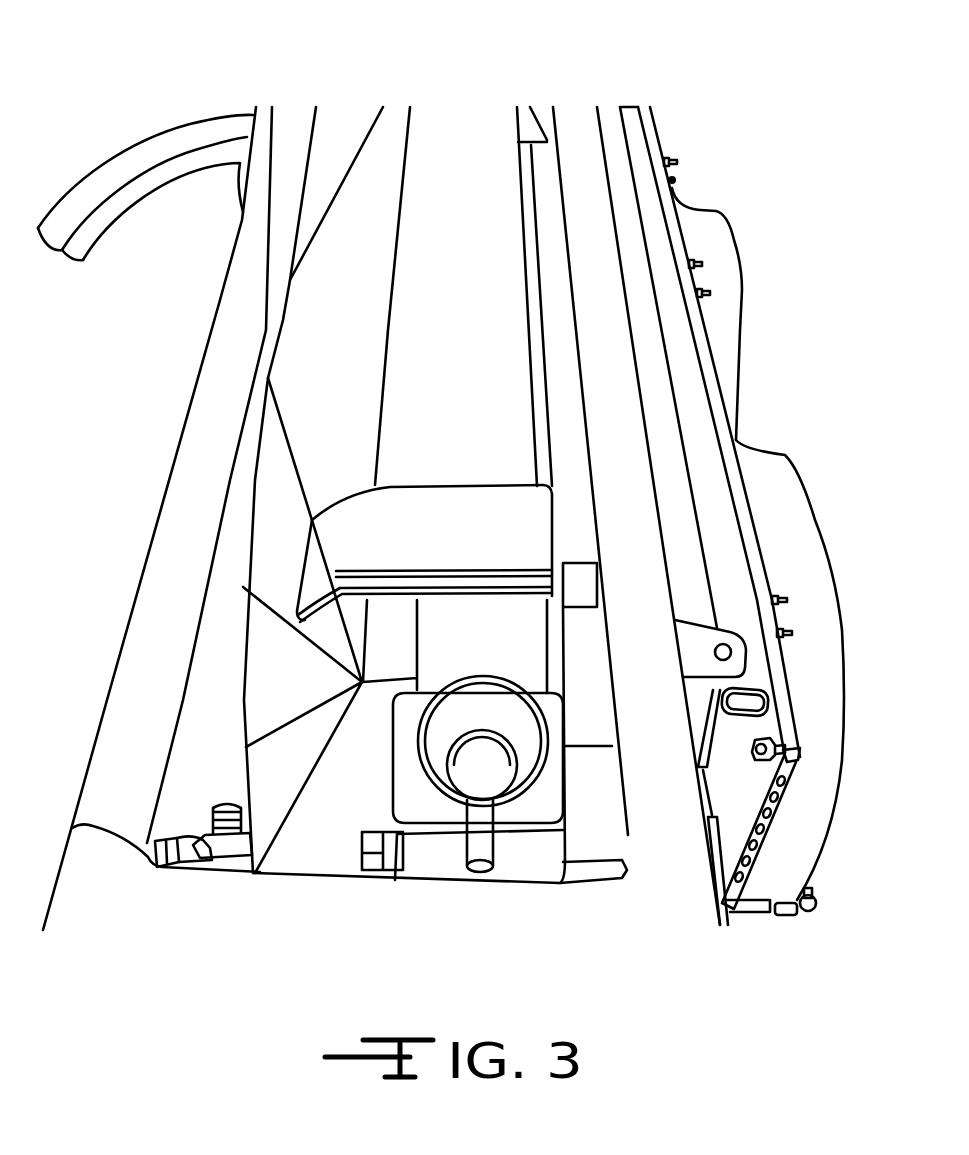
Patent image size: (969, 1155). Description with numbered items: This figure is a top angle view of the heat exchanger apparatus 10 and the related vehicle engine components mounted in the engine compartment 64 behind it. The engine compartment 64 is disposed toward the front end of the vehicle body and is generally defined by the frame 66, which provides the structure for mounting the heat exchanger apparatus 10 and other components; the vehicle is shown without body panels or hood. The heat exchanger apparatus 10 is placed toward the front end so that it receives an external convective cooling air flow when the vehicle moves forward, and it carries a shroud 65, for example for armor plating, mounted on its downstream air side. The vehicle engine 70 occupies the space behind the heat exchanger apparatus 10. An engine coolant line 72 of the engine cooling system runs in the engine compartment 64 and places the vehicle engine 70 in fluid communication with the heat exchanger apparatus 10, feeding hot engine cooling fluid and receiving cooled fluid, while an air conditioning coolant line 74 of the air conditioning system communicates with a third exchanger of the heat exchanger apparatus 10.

The heat exchanger apparatus 10 is at (503, 115).
The engine compartment 64 is at (590, 98).
The shroud 65 is at (440, 118).
The frame 66 is at (287, 118).
The vehicle engine 70 is at (33, 411).
The engine coolant line 72 is at (198, 132).
The air conditioning coolant line 74 is at (227, 160).